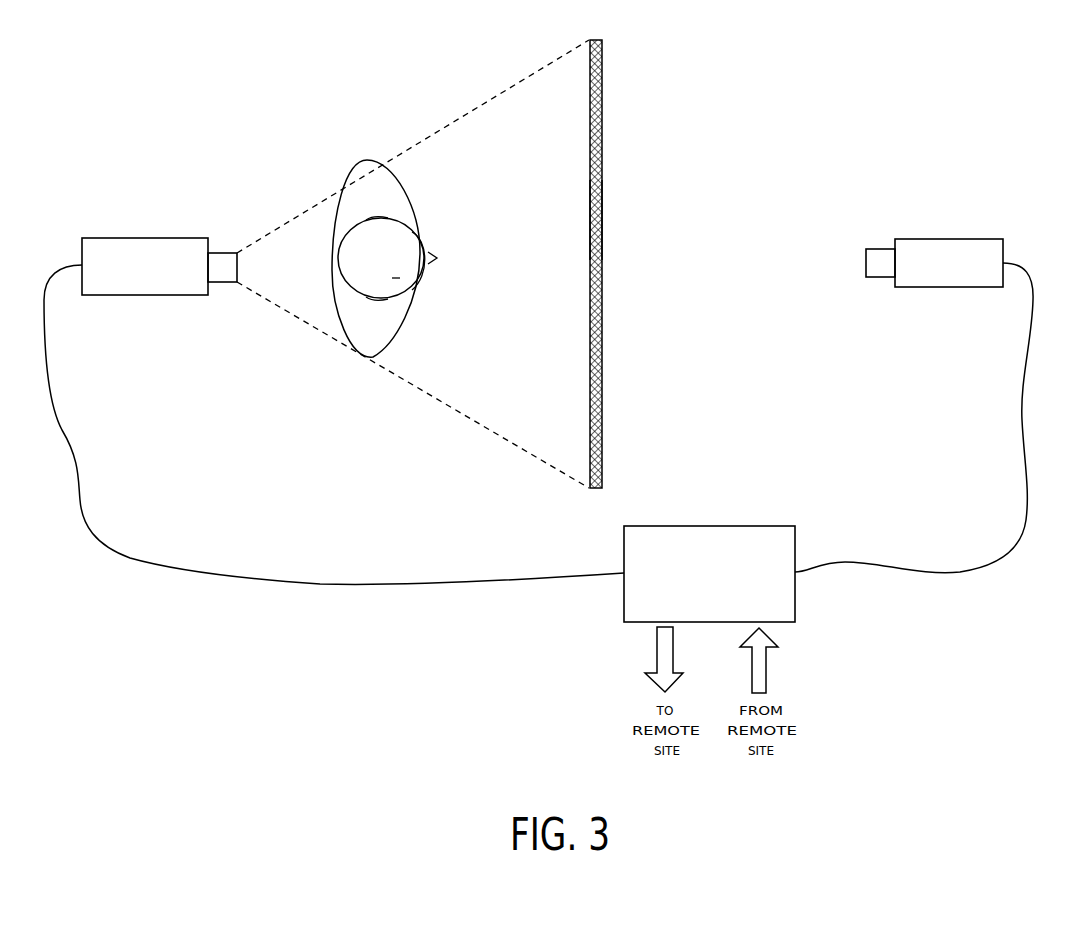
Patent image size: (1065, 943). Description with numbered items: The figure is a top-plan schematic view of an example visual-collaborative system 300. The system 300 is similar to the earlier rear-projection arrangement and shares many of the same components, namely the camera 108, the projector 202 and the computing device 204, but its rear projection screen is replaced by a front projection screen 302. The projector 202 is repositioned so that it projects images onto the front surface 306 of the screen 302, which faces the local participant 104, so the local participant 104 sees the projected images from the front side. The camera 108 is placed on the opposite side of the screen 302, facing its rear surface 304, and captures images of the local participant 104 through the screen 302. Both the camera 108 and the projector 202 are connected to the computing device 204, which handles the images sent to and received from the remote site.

The visual-collaborative system 300 is at (912, 76).
The projector 202 is at (162, 292).
The local participant 104 is at (425, 256).
The front projection screen 302 is at (655, 271).
The rear surface 304 is at (622, 222).
The front surface 306 is at (572, 222).
The camera 108 is at (962, 242).
The computing device 204 is at (770, 584).